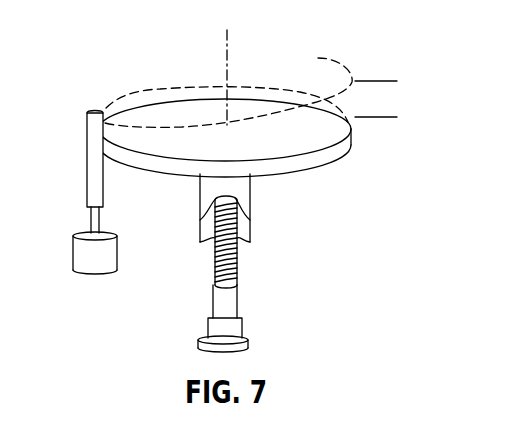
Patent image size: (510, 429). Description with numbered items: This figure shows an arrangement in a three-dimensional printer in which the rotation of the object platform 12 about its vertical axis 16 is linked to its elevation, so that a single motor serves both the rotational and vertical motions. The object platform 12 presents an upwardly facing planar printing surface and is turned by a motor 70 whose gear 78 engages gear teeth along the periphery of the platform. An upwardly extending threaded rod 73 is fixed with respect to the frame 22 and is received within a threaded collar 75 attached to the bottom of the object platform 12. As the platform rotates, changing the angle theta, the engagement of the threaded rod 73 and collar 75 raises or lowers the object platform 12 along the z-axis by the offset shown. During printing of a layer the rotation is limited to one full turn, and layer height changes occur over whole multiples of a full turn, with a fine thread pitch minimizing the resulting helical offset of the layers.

The object platform 12 is at (305, 147).
The vertical axis 16 is at (227, 63).
The frame 22 is at (248, 339).
The motor 70 is at (87, 263).
The threaded rod 73 is at (237, 265).
The threaded collar 75 is at (200, 220).
The gear 78 is at (87, 165).